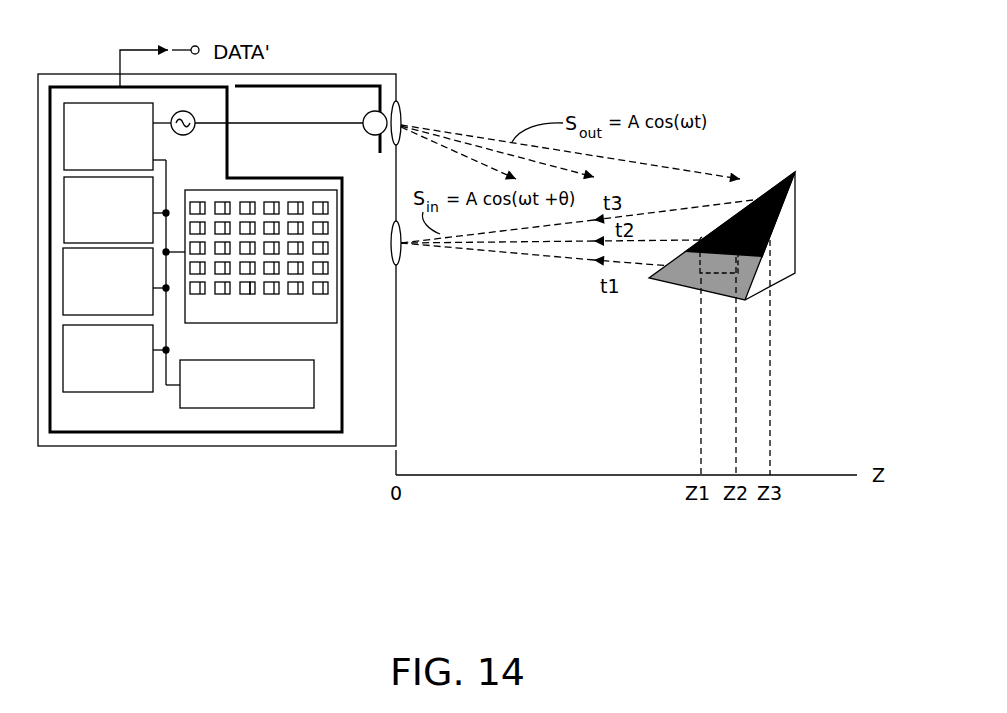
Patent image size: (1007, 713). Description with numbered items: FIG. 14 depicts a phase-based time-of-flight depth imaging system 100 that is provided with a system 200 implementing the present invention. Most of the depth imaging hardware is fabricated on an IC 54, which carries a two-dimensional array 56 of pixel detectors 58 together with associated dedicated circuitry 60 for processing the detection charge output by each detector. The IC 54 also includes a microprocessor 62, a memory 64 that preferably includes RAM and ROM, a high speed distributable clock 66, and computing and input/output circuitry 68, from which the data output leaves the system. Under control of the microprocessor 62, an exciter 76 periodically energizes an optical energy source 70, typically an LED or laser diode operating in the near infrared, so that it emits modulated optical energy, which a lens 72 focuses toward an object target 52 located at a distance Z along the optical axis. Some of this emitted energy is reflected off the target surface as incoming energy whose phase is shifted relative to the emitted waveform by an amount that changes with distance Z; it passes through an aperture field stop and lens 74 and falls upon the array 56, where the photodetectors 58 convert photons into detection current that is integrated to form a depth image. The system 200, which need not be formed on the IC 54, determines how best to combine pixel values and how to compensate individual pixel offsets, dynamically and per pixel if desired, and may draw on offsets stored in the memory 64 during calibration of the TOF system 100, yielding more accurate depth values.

The phase-based TOF system 100 is at (76, 61).
The object target 52 is at (808, 194).
The IC 54 is at (327, 173).
The two-dimensional array 56 is at (202, 189).
The pixel detectors 58 is at (251, 295).
The dedicated circuitry 60 is at (245, 295).
The microprocessor 62 is at (108, 210).
The memory 64 is at (108, 358).
The clock 66 is at (108, 281).
The input/output (I/O) circuitry 68 is at (108, 136).
The optical energy source 70 is at (364, 116).
The lens 72 is at (404, 110).
The aperture field stop and lens 74 is at (406, 258).
The exciter 76 is at (181, 111).
The system 200 is at (247, 384).